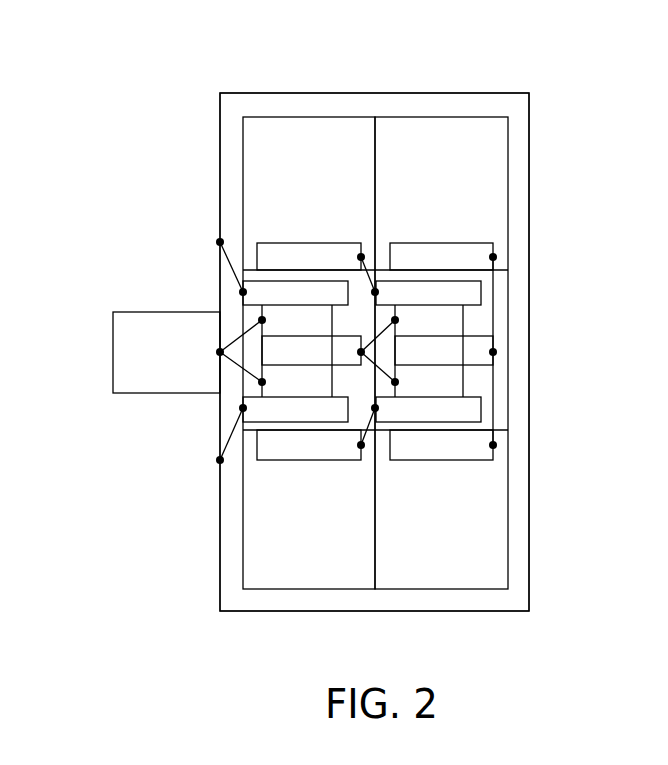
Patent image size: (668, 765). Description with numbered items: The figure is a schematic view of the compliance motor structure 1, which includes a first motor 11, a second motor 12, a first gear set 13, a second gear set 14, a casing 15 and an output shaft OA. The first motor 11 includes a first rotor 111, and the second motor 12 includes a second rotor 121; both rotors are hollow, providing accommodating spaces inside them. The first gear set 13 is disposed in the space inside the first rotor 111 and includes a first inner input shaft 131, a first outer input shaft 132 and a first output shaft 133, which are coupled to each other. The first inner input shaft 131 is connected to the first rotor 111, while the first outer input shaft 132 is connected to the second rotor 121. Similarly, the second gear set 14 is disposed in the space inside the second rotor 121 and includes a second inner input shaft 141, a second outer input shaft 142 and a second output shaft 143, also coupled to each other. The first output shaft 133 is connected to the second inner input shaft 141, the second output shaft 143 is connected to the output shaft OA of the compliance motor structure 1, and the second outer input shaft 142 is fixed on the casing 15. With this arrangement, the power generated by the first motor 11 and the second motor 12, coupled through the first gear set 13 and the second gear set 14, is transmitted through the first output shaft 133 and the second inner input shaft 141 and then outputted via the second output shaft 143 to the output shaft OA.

The compliance motor structure 1 is at (121, 57).
The first motor 11 is at (432, 138).
The second motor 12 is at (305, 132).
The first gear set 13 is at (516, 342).
The second gear set 14 is at (198, 314).
The casing 15 is at (220, 162).
The first rotor 111 is at (438, 255).
The second rotor 121 is at (270, 253).
The first inner input shaft 131 is at (486, 388).
The first outer input shaft 132 is at (467, 293).
The first output shaft 133 is at (382, 366).
The second inner input shaft 141 is at (272, 352).
The second outer input shaft 142 is at (282, 293).
The second output shaft 143 is at (237, 342).
The output shaft OA is at (132, 351).